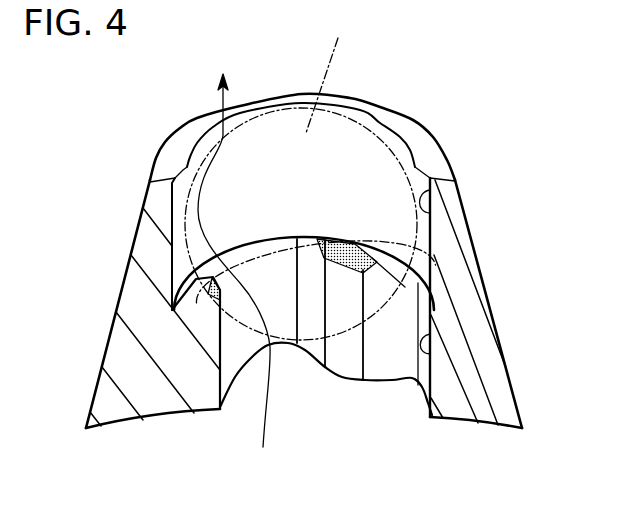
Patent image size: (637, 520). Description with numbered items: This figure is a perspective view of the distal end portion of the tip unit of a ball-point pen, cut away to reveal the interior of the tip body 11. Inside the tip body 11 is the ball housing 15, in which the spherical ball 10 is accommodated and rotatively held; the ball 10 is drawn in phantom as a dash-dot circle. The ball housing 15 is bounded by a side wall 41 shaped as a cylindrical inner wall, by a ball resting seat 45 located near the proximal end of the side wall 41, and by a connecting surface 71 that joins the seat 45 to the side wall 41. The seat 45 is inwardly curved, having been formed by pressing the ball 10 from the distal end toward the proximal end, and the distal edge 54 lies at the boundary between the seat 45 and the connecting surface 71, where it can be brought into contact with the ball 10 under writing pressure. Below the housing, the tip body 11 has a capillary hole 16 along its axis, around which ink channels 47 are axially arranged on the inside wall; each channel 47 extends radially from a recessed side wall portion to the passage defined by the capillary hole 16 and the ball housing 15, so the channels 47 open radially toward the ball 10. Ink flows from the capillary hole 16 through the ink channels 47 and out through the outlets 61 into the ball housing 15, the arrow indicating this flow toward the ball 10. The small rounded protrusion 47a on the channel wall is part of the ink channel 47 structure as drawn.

The ball 10 is at (338, 74).
The tip body 11 is at (148, 247).
The ball housing 15 is at (380, 157).
The capillary hole 16 is at (353, 393).
The side wall 41 is at (432, 211).
The ball resting seat 45 is at (372, 246).
The ink channels 47 is at (238, 360).
The protrusion 47a is at (434, 357).
The distal edge 54 is at (194, 306).
The outlets 61 is at (220, 267).
The connecting surface 71 is at (195, 296).